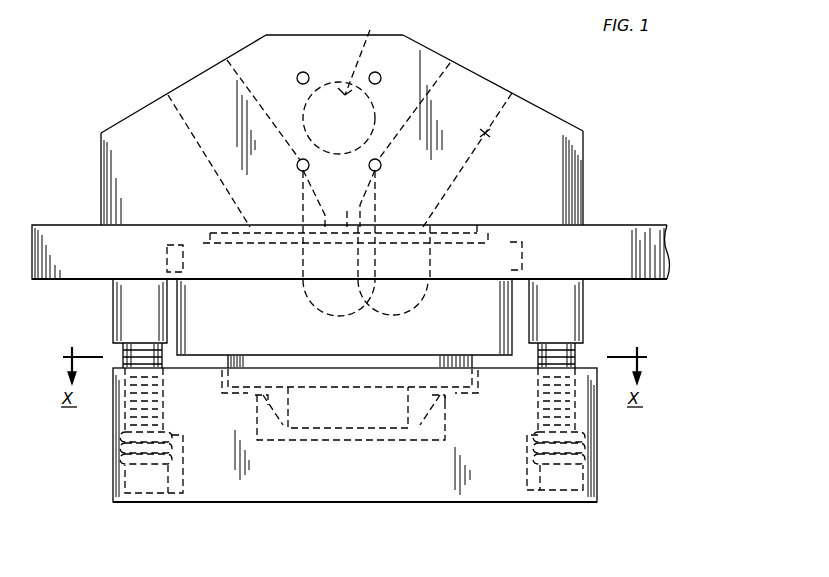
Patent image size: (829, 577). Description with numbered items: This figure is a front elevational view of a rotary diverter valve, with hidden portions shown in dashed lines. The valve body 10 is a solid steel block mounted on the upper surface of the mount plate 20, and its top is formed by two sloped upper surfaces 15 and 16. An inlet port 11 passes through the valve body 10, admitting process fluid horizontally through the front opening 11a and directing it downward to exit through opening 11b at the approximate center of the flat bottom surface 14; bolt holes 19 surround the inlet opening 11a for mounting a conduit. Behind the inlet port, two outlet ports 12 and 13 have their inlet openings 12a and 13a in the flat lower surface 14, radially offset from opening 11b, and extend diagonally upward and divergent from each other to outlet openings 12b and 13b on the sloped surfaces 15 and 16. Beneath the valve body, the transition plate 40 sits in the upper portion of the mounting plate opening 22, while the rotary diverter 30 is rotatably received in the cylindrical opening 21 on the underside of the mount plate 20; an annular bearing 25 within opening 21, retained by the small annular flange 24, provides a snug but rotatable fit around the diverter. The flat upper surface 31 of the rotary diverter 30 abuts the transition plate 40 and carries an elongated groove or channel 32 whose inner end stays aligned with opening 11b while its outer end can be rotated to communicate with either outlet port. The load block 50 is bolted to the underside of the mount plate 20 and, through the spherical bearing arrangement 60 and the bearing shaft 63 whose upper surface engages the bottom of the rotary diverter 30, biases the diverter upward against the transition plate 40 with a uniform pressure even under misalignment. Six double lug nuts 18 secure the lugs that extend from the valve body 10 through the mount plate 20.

The valve body 10 is at (547, 118).
The inlet port 11 is at (381, 172).
The inlet opening 11a is at (372, 27).
The outlet opening of inlet port 11b is at (347, 210).
The outlet port 12 is at (188, 129).
The inlet opening of outlet port 12a is at (345, 254).
The outlet opening 12b is at (195, 73).
The outlet port 13 is at (492, 133).
The inlet opening of outlet port 13a is at (428, 214).
The outlet opening 13b is at (500, 86).
The flat bottom surface 14 is at (233, 214).
The sloped upper surface 15 is at (133, 113).
The sloped upper surface 16 is at (572, 126).
The double lug nuts 18 is at (132, 315).
The bolt holes 19 is at (303, 158).
The mount plate 20 is at (77, 242).
The cylindrical opening 21 is at (523, 247).
The upper portion of opening 22 is at (184, 248).
The flange 24 is at (510, 276).
The annular bearing 25 is at (165, 258).
The rotary diverter 30 is at (488, 324).
The flat upper surface 31 is at (468, 228).
The elongated groove or channel 32 is at (416, 313).
The transition plate 40 is at (464, 230).
The load block 50 is at (509, 474).
The spherical bearing arrangement 60 is at (437, 418).
The bearing shaft 63 is at (226, 361).